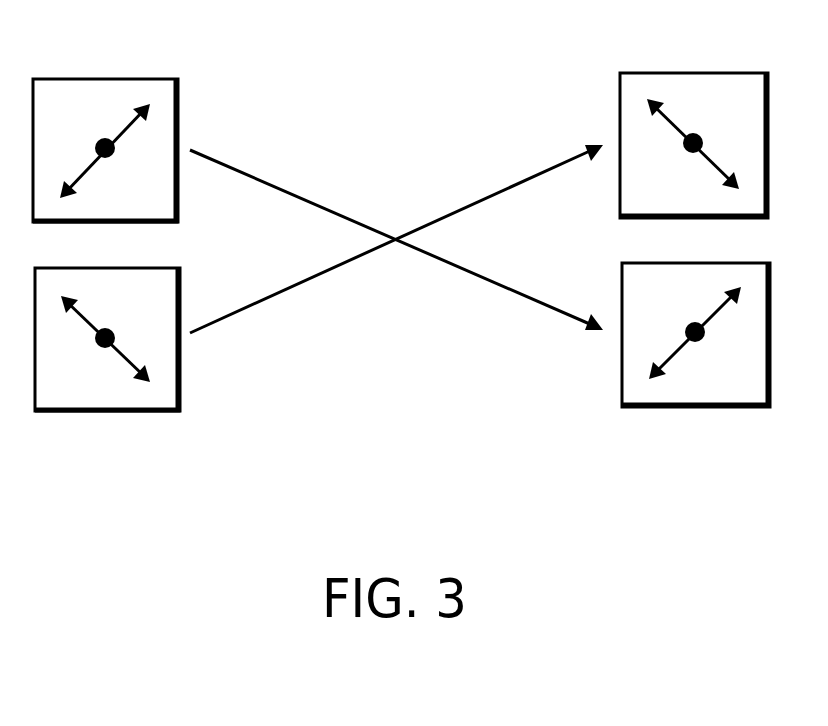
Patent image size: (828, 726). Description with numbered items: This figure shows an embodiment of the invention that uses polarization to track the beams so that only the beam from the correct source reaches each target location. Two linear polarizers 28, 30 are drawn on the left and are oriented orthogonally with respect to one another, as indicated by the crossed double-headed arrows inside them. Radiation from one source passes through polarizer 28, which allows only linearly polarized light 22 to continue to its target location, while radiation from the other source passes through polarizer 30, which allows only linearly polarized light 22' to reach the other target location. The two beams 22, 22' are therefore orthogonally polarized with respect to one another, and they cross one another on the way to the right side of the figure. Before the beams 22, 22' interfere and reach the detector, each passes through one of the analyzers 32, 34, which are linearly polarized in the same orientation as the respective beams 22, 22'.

The linearly polarized light 22 is at (396, 222).
The linearly polarized light 22' is at (396, 259).
The linear polarizer 28 is at (102, 78).
The linear polarizer 30 is at (106, 411).
The analyzer 32 is at (692, 73).
The analyzer 34 is at (697, 407).